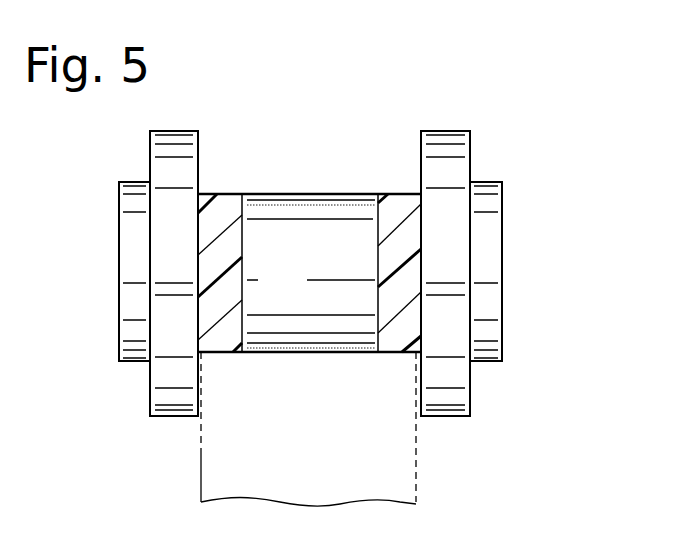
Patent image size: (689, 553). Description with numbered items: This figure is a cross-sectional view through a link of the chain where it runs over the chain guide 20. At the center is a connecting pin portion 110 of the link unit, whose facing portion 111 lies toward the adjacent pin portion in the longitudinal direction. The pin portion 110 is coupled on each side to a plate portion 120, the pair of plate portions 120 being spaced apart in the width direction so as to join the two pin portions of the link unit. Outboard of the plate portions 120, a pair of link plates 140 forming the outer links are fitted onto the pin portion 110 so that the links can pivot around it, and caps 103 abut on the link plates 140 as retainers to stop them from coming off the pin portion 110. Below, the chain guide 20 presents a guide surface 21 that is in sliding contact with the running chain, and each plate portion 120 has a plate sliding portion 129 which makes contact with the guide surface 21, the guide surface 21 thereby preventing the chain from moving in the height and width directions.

The chain guide 20 is at (261, 433).
The guide surface 21 is at (303, 345).
The cap 103 is at (128, 254).
The connecting pin portion 110 is at (318, 203).
The facing portion 111 is at (355, 242).
The plate portion 120 is at (256, 122).
The plate sliding portion 129 is at (220, 356).
The link plate 140 is at (165, 373).